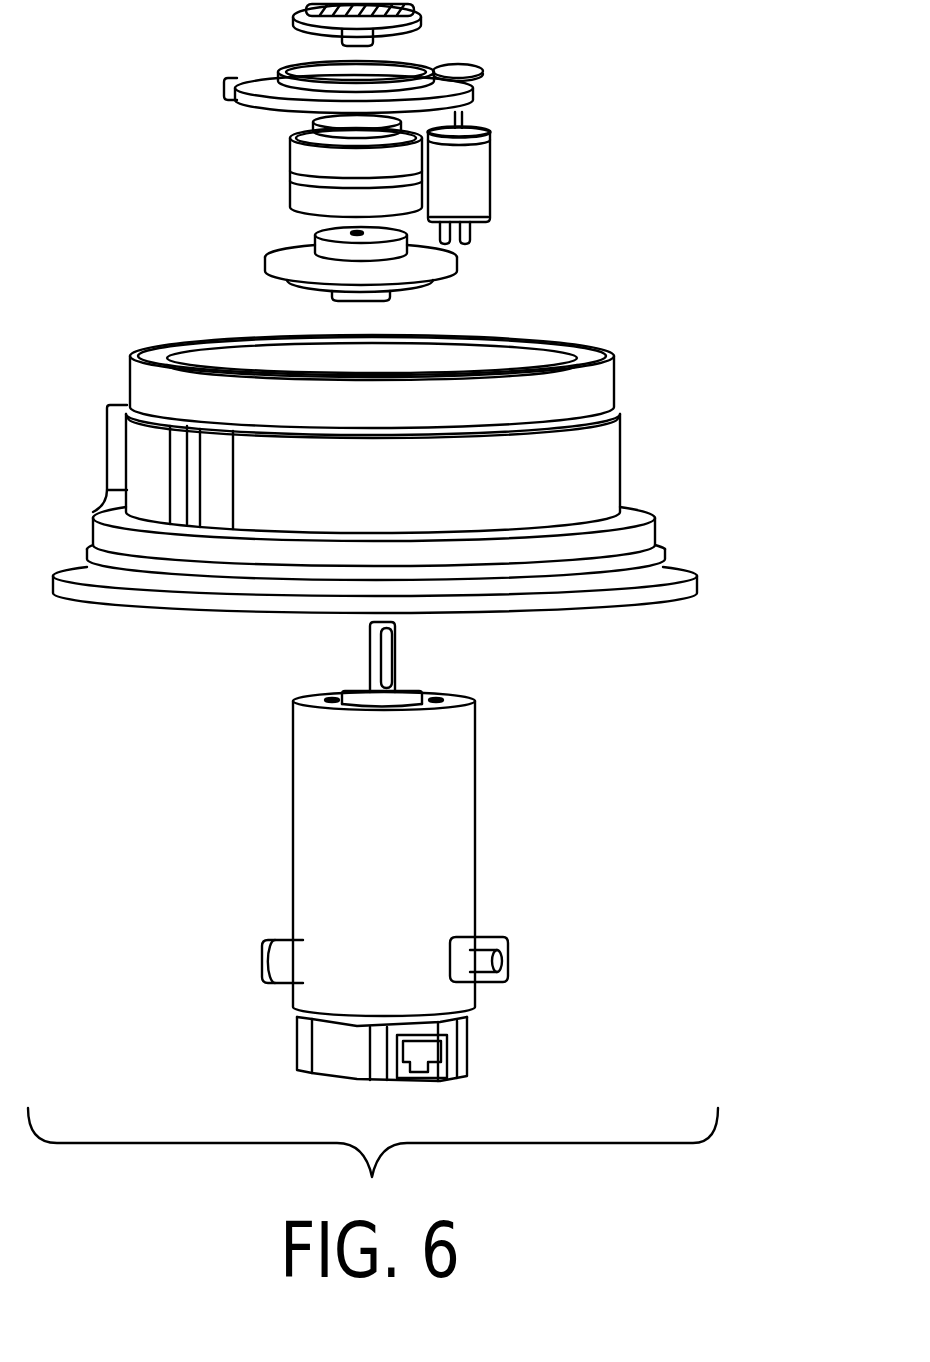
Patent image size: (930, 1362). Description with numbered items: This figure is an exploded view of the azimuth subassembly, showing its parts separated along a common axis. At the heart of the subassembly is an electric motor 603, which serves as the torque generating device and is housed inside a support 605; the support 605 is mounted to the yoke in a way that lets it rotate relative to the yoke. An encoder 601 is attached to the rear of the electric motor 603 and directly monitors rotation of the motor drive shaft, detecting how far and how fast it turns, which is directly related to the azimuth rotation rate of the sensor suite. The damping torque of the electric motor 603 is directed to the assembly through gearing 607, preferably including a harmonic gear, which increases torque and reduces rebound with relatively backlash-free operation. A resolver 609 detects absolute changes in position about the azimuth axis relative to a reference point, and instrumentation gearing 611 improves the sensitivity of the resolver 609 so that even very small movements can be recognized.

The encoder 601 is at (295, 1041).
The electric motor 603 is at (477, 830).
The support 605 is at (622, 462).
The gearing 607 is at (292, 152).
The resolver 609 is at (491, 182).
The instrumentation gearing 611 is at (483, 70).